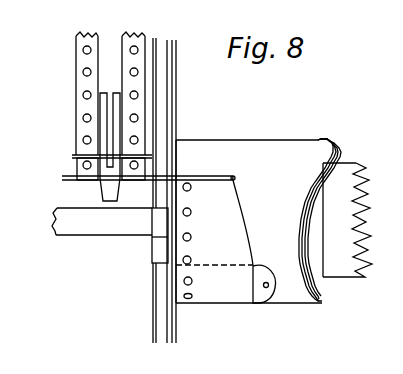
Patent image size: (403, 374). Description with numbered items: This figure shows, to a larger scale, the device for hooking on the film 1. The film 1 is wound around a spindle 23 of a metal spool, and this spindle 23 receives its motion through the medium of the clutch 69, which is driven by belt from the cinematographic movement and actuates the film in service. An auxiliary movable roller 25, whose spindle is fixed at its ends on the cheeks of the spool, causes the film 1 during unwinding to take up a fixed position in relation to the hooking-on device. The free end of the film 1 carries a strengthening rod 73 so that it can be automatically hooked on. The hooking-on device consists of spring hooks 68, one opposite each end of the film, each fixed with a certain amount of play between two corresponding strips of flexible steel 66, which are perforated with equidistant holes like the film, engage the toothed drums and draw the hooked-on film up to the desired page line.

The film 1 is at (298, 153).
The spindle 23 is at (347, 265).
The auxiliary movable roller 25 is at (263, 300).
The strips of flexible steel 66 is at (125, 62).
The spring hooks 68 is at (115, 137).
The clutch 69 is at (114, 227).
The strengthening rod 73 is at (207, 178).